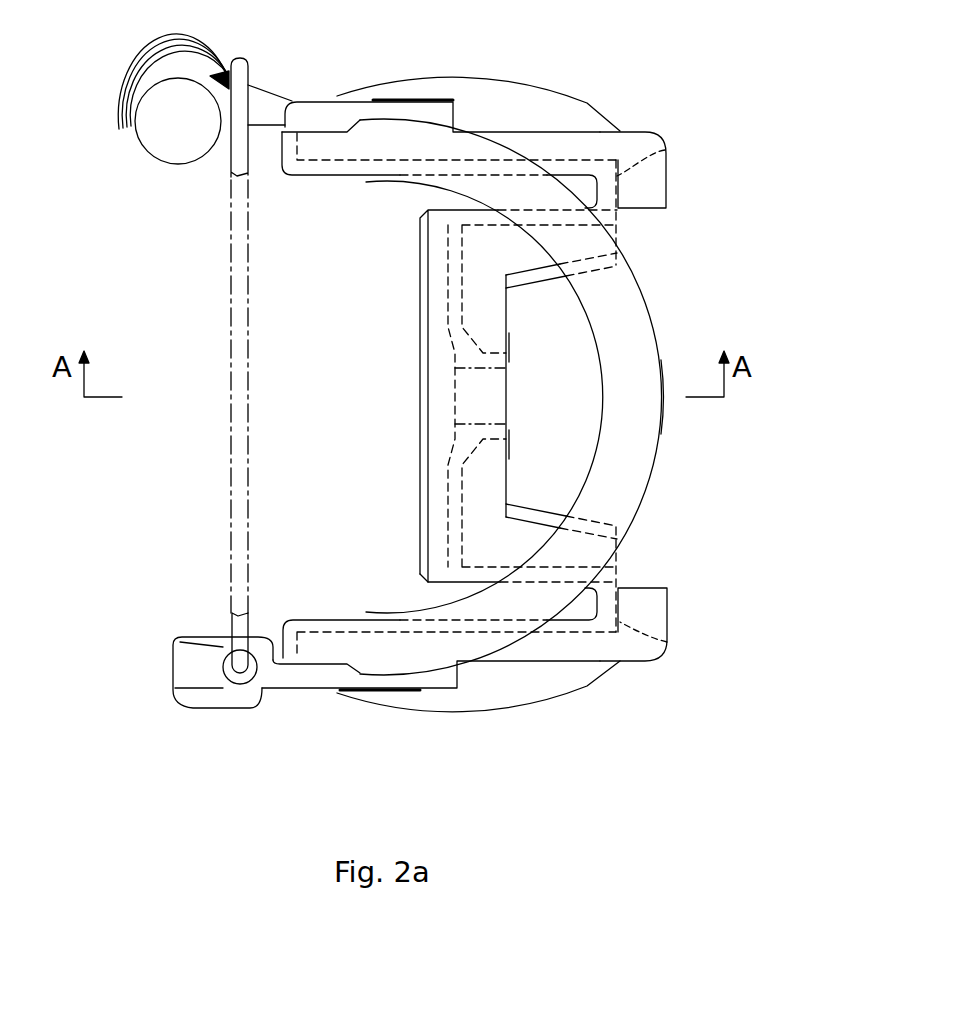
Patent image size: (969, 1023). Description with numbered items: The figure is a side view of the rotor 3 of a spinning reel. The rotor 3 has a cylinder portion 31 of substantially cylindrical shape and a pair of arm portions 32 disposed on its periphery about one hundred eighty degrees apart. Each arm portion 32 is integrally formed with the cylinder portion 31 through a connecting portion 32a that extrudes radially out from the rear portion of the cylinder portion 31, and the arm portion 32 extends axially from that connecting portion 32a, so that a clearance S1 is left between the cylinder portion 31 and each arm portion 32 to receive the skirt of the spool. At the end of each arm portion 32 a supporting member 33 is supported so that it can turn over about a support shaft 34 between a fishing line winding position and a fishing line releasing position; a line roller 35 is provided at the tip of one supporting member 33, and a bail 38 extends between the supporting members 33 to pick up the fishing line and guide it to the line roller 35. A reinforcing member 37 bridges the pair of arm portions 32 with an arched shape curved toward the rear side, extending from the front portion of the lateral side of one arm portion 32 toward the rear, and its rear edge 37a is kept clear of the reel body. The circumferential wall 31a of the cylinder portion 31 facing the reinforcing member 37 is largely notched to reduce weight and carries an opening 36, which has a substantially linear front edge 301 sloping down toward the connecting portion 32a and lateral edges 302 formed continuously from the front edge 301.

The rotor 3 is at (630, 89).
The cylinder portion 31 is at (418, 283).
The circumferential wall 31a is at (490, 545).
The arm portion 32 is at (643, 138).
The connecting portion 32a is at (665, 150).
The supporting member 33 is at (317, 112).
The support shaft 34 is at (407, 108).
The line roller 35 is at (117, 99).
The opening 36 is at (562, 397).
The reinforcing member 37 is at (642, 297).
The rear edge 37a is at (665, 391).
The bail 38 is at (228, 257).
The front edge 301 is at (507, 337).
The lateral edge 302 is at (532, 278).
The clearance S1 is at (577, 185).